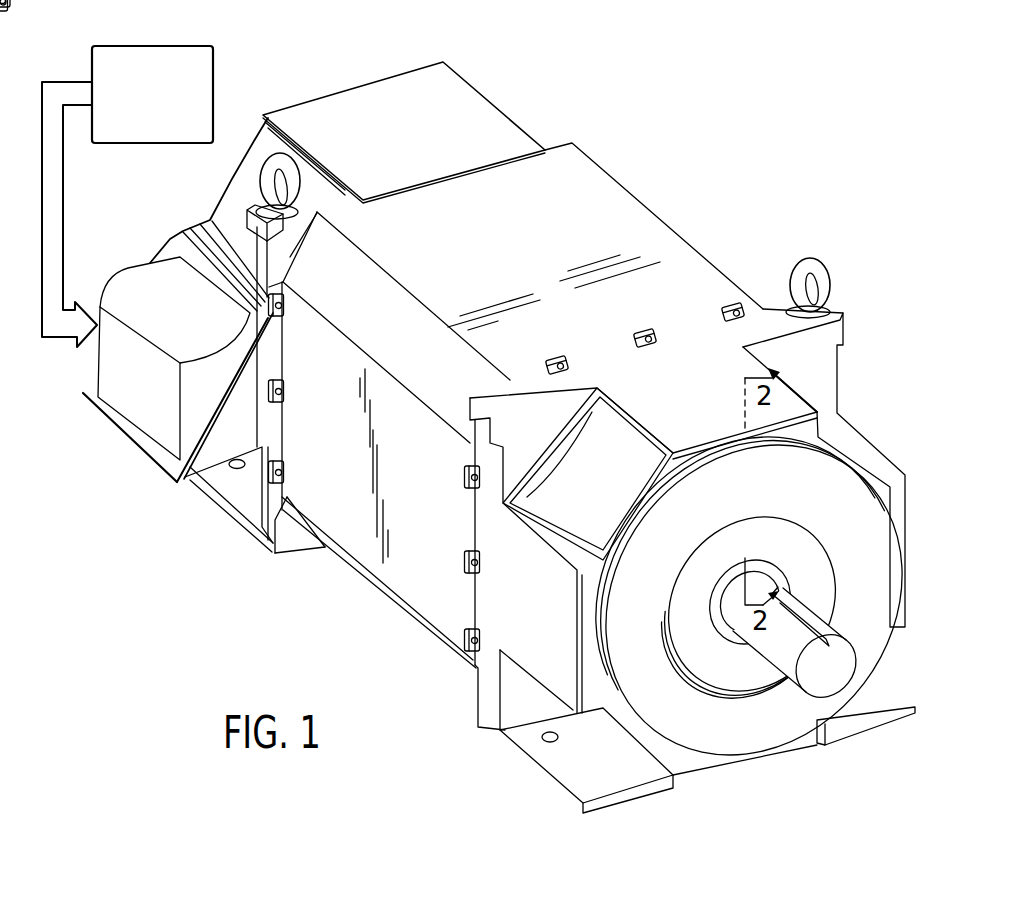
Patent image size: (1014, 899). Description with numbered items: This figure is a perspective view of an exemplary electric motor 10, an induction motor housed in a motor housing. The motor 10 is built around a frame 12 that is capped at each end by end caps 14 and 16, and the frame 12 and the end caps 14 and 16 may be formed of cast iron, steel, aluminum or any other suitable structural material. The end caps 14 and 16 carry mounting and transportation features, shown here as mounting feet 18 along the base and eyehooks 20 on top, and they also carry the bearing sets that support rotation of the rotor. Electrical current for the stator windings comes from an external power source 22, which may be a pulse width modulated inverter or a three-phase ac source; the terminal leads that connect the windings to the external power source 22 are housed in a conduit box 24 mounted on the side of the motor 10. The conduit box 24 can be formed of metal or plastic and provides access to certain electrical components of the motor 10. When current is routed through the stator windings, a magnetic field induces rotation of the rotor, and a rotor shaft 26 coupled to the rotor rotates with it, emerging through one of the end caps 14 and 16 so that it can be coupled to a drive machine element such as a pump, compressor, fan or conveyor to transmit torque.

The electric motor 10 is at (617, 66).
The frame 12 is at (632, 217).
The end cap 14 is at (766, 318).
The end cap 16 is at (387, 90).
The mounting feet 18 is at (573, 768).
The eyehooks 20 is at (268, 174).
The external power source 22 is at (152, 45).
The conduit box 24 is at (123, 403).
The rotor shaft 26 is at (840, 672).